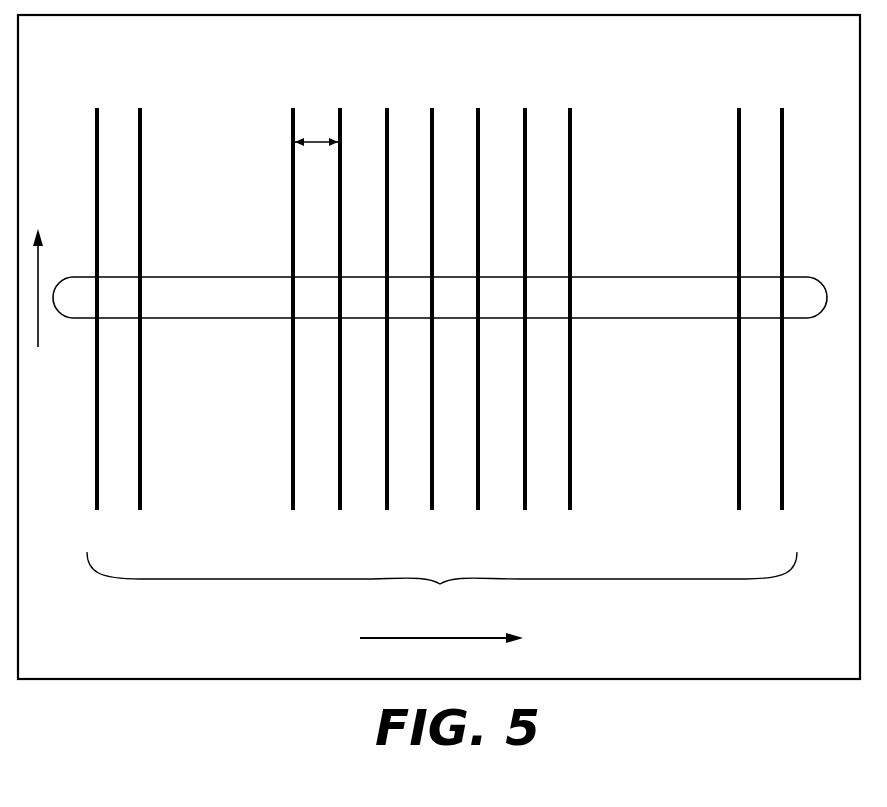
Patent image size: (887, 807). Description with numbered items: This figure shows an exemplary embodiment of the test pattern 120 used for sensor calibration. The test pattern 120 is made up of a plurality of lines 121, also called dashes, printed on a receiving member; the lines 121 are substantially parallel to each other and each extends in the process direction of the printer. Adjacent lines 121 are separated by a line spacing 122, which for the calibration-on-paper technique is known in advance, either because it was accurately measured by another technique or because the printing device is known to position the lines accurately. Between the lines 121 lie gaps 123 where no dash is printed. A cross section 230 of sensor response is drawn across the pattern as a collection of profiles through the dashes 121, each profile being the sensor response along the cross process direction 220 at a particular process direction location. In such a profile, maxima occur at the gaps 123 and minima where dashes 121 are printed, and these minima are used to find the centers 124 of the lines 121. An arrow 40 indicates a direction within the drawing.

The test pattern 120 is at (484, 70).
The lines 121 is at (447, 361).
The line spacing 122 is at (317, 141).
The gaps 123 is at (547, 126).
The centers of the lines 124 is at (784, 372).
The cross section of sensor response 230 is at (818, 278).
The direction arrow 40 is at (40, 278).
The cross process direction 220 is at (412, 640).